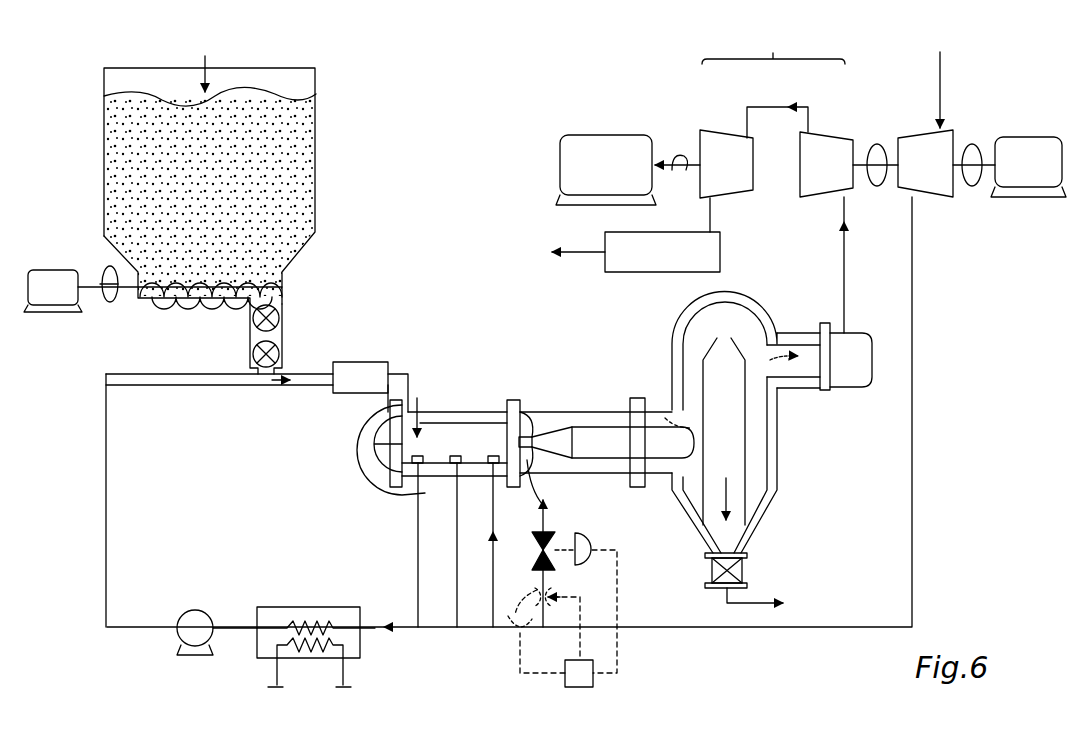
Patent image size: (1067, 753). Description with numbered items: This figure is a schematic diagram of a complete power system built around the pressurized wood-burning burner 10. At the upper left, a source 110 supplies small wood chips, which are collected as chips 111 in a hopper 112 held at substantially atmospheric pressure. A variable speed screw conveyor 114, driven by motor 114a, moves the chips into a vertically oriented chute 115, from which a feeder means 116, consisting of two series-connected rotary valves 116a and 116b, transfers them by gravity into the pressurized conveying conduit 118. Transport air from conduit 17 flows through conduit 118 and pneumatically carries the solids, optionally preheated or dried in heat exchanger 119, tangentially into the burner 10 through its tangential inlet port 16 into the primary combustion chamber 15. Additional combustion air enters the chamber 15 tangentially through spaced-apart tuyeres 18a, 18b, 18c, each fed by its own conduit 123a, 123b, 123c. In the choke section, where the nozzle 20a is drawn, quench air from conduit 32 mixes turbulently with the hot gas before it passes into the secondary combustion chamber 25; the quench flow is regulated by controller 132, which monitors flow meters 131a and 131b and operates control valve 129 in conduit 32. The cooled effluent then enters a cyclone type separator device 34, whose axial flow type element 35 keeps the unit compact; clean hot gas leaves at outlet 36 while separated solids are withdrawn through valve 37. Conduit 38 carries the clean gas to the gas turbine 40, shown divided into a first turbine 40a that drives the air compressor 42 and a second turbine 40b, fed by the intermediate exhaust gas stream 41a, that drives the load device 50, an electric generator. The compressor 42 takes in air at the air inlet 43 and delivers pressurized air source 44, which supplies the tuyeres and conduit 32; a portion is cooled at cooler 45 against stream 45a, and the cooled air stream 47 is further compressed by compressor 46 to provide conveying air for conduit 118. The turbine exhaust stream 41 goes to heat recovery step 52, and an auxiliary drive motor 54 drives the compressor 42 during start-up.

The burner 10 is at (476, 412).
The primary combustion chamber 15 is at (364, 432).
The tangential inlet port 16 is at (437, 412).
The conduit 17 is at (107, 548).
The tuyere 18a is at (412, 458).
The tuyere 18b is at (452, 465).
The tuyere 18c is at (495, 465).
The outlet nozzle 20a is at (532, 437).
The secondary combustion chamber 25 is at (603, 437).
The conduit 32 is at (546, 515).
The cyclone type separator device 34 is at (783, 488).
The axial flow type element 35 is at (748, 452).
The clean hot effluent gas outlet 36 is at (800, 392).
The valve 37 is at (746, 570).
The conduit 38 is at (844, 248).
The gas turbine 40 is at (773, 115).
The first turbine 40a is at (815, 140).
The second turbine 40b is at (728, 138).
The exhaust stream 41 is at (718, 214).
The intermediate exhaust gas stream 41a is at (778, 106).
The air compressor 42 is at (918, 135).
The air inlet 43 is at (943, 72).
The pressurized air source 44 is at (912, 248).
The cooler 45 is at (330, 612).
The cooling stream 45a is at (345, 668).
The compressor 46 is at (178, 634).
The cooled air stream 47 is at (230, 628).
The load device 50 is at (608, 140).
The heat recovery step 52 is at (605, 258).
The auxiliary drive motor 54 is at (1023, 137).
The source 110 is at (312, 96).
The chips 111 is at (272, 178).
The hopper 112 is at (316, 136).
The variable speed screw conveyor 114 is at (262, 256).
The motor 114a is at (96, 308).
The chute 115 is at (286, 294).
The feeder means 116 is at (224, 339).
The rotary valve 116a is at (252, 316).
The rotary valve 116b is at (252, 352).
The pressurized conveying conduit 118 is at (338, 361).
The heat exchanger 119 is at (392, 370).
The conduit 123a is at (418, 526).
The conduit 123b is at (457, 556).
The conduit 123c is at (493, 598).
The control valve 129 is at (592, 545).
The flow meter 131a is at (552, 594).
The flow meter 131b is at (513, 634).
The controller 132 is at (618, 667).